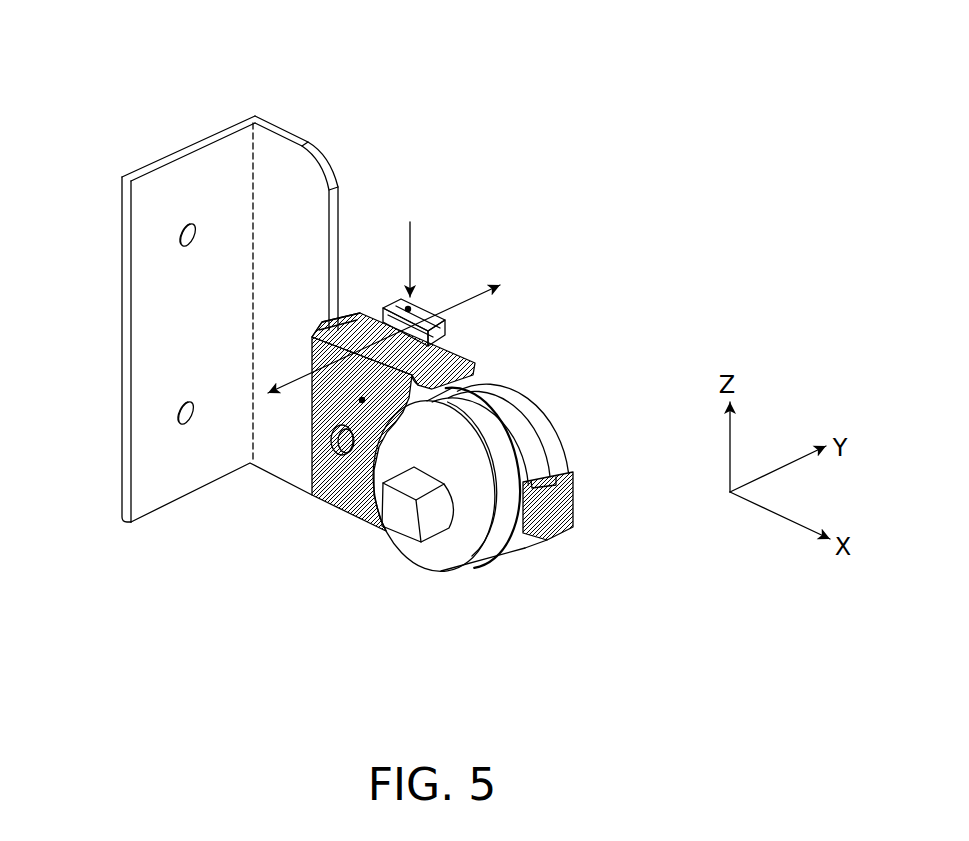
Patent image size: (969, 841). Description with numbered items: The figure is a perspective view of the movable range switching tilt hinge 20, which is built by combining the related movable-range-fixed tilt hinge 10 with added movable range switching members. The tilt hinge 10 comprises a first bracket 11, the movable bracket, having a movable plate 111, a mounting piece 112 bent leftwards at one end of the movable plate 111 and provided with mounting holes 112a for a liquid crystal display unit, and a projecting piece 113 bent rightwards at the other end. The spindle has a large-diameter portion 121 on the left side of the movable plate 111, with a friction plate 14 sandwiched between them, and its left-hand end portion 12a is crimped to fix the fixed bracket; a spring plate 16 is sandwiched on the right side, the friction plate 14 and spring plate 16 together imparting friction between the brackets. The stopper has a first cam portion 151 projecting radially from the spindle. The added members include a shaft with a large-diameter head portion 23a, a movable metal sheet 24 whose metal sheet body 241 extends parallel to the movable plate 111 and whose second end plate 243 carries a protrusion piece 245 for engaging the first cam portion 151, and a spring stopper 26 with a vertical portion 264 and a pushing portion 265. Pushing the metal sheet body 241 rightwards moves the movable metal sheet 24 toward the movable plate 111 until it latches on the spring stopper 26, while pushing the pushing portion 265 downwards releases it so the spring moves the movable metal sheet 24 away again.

The movable range switching tilt hinge 20 is at (517, 93).
The tilt hinge 10 is at (292, 130).
The first bracket 11 is at (148, 304).
The movable plate 111 is at (318, 150).
The mounting piece 112 is at (172, 148).
The mounting holes 112a is at (180, 235).
The projecting piece 113 is at (560, 503).
The left-hand end portion 12a is at (402, 532).
The large-diameter portion 121 is at (495, 540).
The friction plate 14 is at (535, 543).
The first cam portion 151 is at (542, 400).
The spring plate 16 is at (512, 396).
The large-diameter portion (head portion) 23a is at (334, 452).
The movable metal sheet 24 is at (347, 521).
The metal sheet body 241 is at (323, 494).
The second end plate 243 is at (405, 362).
The protrusion piece 245 is at (447, 340).
The spring stopper 26 is at (432, 305).
The vertical portion 264 is at (352, 320).
The pushing portion 265 is at (400, 301).